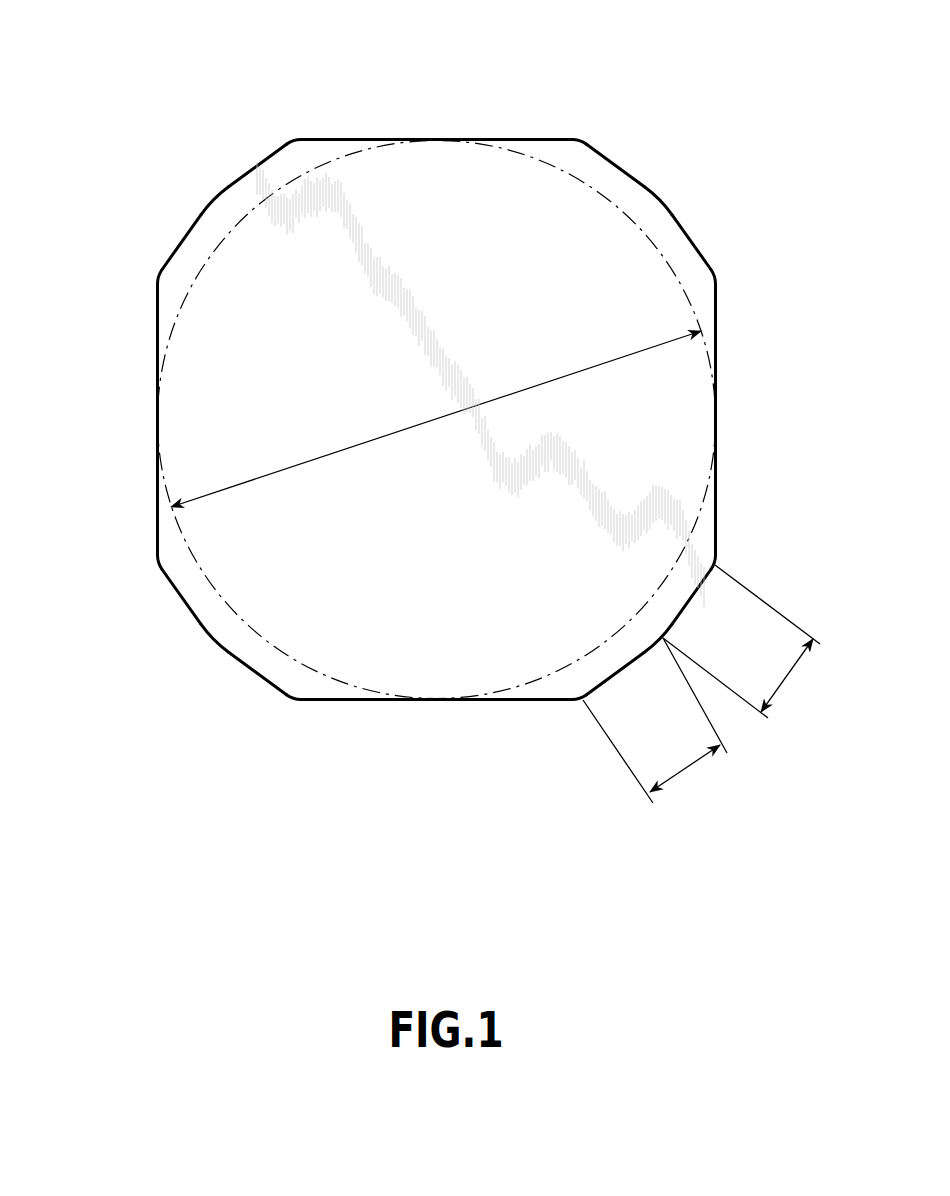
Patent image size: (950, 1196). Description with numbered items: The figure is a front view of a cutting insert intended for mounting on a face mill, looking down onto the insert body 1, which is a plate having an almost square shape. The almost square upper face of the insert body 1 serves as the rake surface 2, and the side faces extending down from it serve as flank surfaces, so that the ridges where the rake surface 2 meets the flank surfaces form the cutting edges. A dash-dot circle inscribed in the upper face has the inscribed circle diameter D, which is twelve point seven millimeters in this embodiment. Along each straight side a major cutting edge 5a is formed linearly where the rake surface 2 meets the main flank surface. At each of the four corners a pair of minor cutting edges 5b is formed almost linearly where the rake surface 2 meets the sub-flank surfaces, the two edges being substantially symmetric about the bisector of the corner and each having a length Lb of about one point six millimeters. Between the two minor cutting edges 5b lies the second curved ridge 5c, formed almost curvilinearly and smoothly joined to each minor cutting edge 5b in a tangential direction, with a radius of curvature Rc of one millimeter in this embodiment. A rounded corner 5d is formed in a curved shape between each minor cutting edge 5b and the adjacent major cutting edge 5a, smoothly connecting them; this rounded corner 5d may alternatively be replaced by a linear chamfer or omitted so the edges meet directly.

The insert body 1 is at (437, 405).
The rake surface 2 is at (460, 332).
The major cutting edge 5a is at (348, 139).
The minor cutting edges 5b is at (252, 170).
The second curved ridge 5c is at (212, 197).
The rounded corner 5d is at (297, 139).
The radius of curvature of the second curved ridge Rc is at (224, 208).
The inscribed circle diameter D is at (556, 377).
The length of the minor cutting edge Lb is at (701, 684).